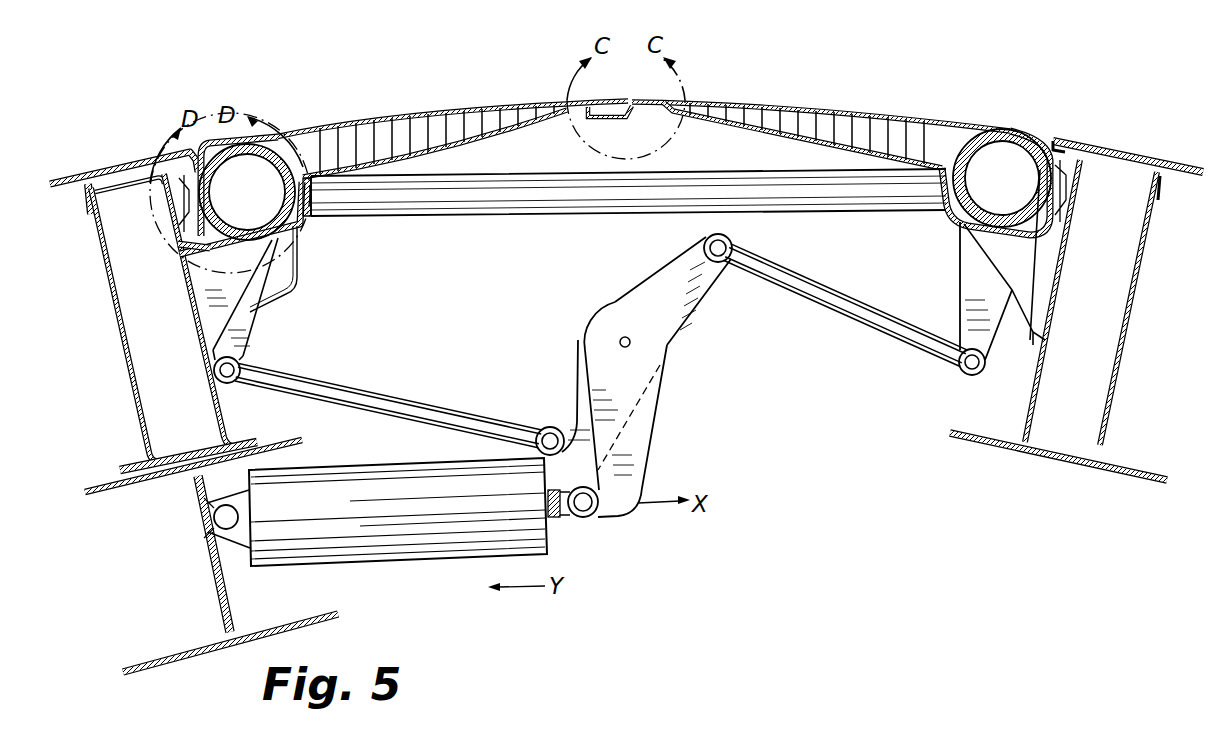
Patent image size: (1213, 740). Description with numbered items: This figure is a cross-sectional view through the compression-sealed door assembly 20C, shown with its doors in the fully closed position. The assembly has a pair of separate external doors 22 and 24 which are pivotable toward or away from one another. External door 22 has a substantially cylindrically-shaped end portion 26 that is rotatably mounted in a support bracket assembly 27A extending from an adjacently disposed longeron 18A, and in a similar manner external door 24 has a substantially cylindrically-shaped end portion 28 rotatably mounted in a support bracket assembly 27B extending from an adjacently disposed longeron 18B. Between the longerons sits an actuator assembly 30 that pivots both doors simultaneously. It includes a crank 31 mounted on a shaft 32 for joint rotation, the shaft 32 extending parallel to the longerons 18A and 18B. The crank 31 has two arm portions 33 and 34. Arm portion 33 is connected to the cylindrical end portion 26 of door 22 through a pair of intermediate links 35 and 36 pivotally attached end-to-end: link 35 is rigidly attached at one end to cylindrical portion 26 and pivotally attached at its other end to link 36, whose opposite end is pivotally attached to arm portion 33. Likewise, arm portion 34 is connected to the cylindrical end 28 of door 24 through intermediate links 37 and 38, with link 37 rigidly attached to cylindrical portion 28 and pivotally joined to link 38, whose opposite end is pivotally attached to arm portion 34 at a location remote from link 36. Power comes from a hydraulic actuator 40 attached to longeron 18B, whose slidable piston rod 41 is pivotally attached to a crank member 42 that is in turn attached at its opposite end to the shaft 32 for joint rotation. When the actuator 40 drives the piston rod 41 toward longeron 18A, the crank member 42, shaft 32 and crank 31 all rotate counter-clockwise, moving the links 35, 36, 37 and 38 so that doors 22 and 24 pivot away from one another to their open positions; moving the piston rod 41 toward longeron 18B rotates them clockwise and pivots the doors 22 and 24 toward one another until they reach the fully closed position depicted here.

The longeron 18A is at (1143, 243).
The longeron 18B is at (108, 293).
The cover 20C is at (642, 98).
The external door 22 is at (876, 120).
The external door 24 is at (374, 115).
The cylindrically-shaped end portion 26 is at (1005, 150).
The support bracket assembly 27A is at (1033, 333).
The support bracket assembly 27B is at (226, 313).
The cylindrically-shaped end portion 28 is at (211, 143).
The actuator assembly 30 is at (612, 535).
The crank 31 is at (629, 396).
The shaft 32 is at (618, 342).
The arm portion 33 is at (677, 270).
The arm portion 34 is at (585, 387).
The intermediate link 35 is at (965, 300).
The intermediate link 36 is at (846, 318).
The intermediate link 37 is at (250, 338).
The intermediate link 38 is at (372, 395).
The hydraulic actuator 40 is at (407, 555).
The piston rod 41 is at (552, 518).
The crank member 42 is at (644, 455).